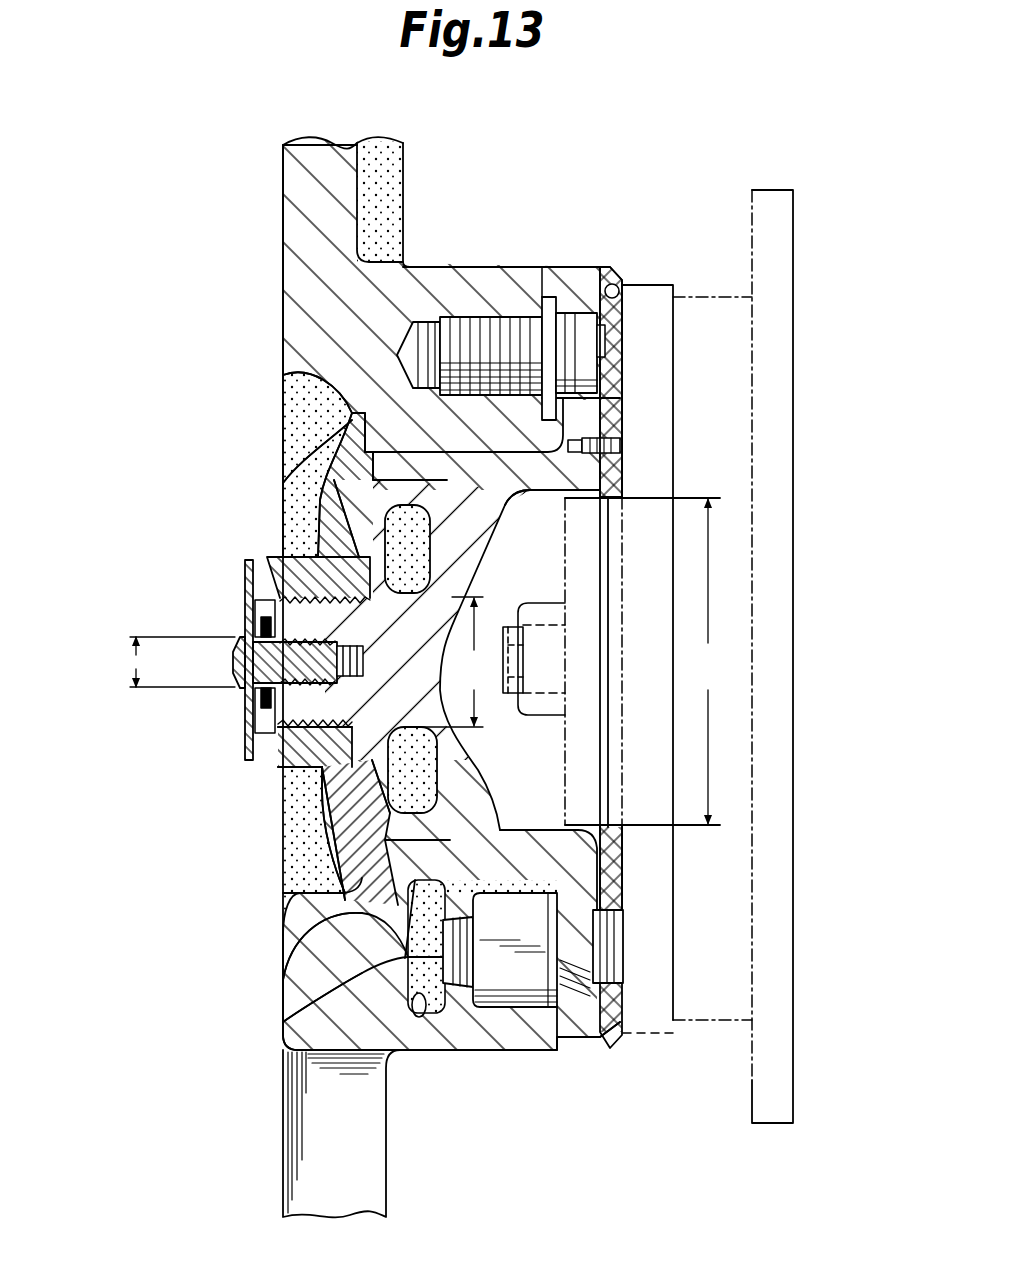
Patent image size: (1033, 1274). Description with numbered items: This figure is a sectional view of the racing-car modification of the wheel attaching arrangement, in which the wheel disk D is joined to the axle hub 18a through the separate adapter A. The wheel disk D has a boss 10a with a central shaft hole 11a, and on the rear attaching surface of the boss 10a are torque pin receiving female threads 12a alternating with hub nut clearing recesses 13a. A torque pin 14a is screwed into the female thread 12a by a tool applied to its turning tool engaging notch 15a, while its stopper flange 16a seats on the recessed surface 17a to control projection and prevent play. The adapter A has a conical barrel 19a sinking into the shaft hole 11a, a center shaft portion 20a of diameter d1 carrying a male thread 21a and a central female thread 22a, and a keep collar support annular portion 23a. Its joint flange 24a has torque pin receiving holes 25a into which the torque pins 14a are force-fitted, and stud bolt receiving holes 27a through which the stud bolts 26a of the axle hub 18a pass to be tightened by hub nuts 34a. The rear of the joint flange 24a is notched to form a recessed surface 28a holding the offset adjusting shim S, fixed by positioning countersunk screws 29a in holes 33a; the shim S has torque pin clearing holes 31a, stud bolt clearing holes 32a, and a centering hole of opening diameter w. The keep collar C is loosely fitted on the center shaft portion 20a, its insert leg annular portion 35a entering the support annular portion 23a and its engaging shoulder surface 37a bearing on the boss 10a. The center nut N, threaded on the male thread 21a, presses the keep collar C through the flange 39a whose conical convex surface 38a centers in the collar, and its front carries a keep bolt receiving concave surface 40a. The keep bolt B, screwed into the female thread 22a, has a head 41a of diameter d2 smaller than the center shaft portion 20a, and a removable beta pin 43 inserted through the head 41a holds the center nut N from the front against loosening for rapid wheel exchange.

The torque pin receiving female thread 12a is at (413, 318).
The torque pin 14a is at (483, 327).
The recessed surface 17a is at (528, 287).
The stopper flange 16a is at (549, 297).
The turning tool engaging notch 15a is at (603, 360).
The torque pin receiving hole 25a is at (605, 382).
The recessed surface 28a is at (620, 300).
The torque pin clearing hole 31a is at (622, 312).
The positioning countersunk screw 29a is at (622, 447).
The countersunk screw receiving hole 33a is at (623, 477).
The wheel disk D is at (281, 308).
The engaging shoulder surface 37a is at (284, 377).
The keep collar support annular portion 23a is at (350, 413).
The conical convex surface 38a is at (317, 487).
The flange 39a is at (327, 537).
The center nut N is at (267, 560).
The keep bolt receiving concave surface 40a is at (246, 615).
The head 41a is at (233, 647).
The head diameter d2 is at (165, 662).
The keep bolt B is at (232, 675).
The beta pin 43 is at (247, 728).
The male thread 21a is at (272, 764).
The center shaft portion 20a is at (312, 770).
The keep collar C is at (285, 840).
The shaft hole 11a is at (325, 873).
The boss 10a is at (287, 985).
The stud bolt 26a is at (300, 1020).
The hub nut clearing recess 13a is at (423, 1018).
The hub nut 34a is at (473, 1008).
The stud bolt receiving hole 27a is at (538, 1030).
The joint flange 24a is at (587, 1038).
The axle hub 18a is at (660, 1022).
The stud bolt clearing hole 32a is at (624, 928).
The offset adjusting shim S is at (629, 876).
The conical barrel 19a is at (543, 850).
The female thread 22a is at (337, 692).
The insert leg annular portion 35a is at (440, 532).
The adapter A is at (500, 515).
The center shaft diameter d1 is at (445, 662).
The opening diameter w is at (707, 661).